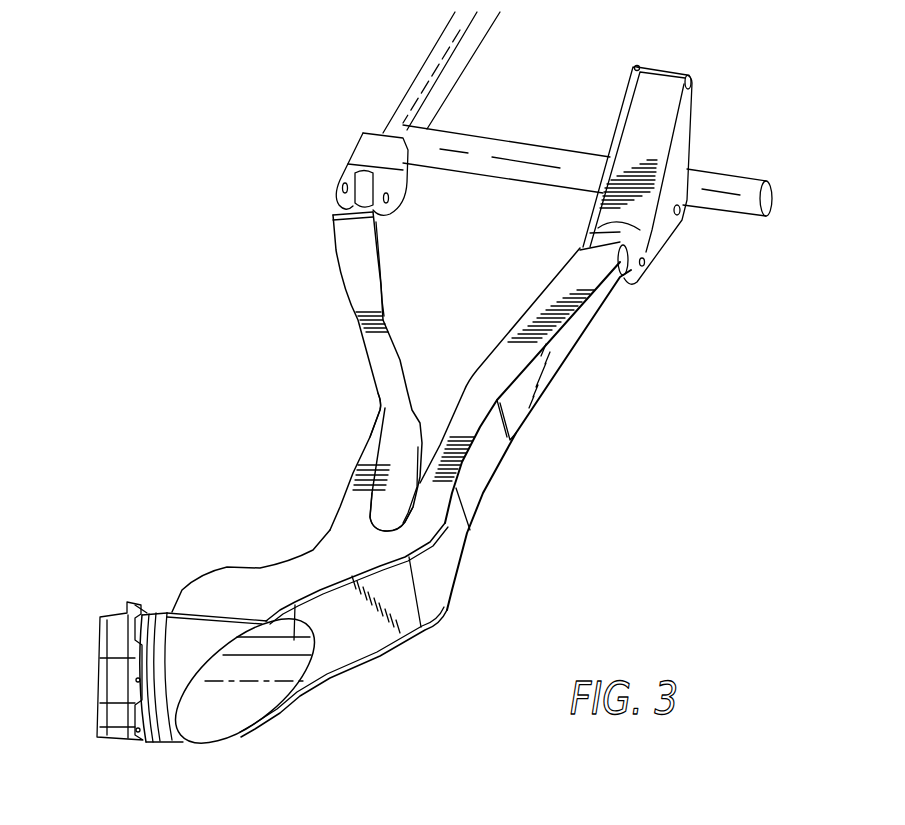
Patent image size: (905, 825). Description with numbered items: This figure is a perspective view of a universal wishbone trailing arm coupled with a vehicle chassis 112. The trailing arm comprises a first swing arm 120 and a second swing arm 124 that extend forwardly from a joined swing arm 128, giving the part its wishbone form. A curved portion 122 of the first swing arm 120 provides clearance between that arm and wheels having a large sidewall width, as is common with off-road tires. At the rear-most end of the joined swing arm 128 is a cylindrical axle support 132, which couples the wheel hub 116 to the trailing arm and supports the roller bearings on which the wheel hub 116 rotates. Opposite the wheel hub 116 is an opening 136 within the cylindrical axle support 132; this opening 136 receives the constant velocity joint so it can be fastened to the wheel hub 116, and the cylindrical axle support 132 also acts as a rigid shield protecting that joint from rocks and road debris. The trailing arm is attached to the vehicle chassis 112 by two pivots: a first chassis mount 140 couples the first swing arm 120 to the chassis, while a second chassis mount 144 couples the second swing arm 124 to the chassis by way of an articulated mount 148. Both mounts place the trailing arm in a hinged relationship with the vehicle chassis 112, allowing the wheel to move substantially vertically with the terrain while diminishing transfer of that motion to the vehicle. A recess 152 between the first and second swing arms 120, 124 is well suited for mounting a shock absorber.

The vehicle chassis 112 is at (412, 97).
The wheel hub 116 is at (100, 633).
The first swing arm 120 is at (356, 316).
The curved portion 122 is at (380, 405).
The second swing arm 124 is at (557, 347).
The joined swing arm 128 is at (340, 643).
The cylindrical axle support 132 is at (168, 722).
The opening 136 is at (237, 712).
The first chassis mount 140 is at (362, 197).
The second chassis mount 144 is at (610, 243).
The articulated mount 148 is at (660, 82).
The recess 152 is at (393, 502).